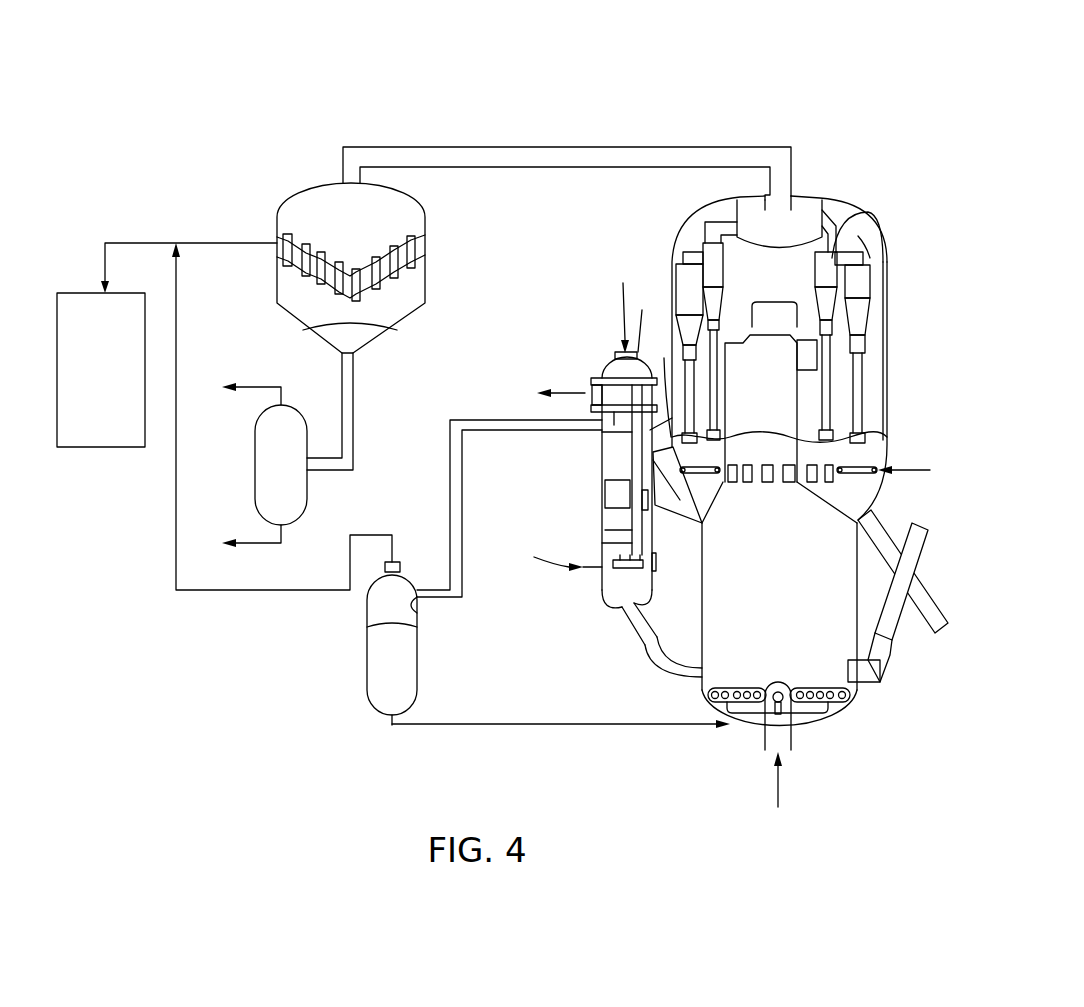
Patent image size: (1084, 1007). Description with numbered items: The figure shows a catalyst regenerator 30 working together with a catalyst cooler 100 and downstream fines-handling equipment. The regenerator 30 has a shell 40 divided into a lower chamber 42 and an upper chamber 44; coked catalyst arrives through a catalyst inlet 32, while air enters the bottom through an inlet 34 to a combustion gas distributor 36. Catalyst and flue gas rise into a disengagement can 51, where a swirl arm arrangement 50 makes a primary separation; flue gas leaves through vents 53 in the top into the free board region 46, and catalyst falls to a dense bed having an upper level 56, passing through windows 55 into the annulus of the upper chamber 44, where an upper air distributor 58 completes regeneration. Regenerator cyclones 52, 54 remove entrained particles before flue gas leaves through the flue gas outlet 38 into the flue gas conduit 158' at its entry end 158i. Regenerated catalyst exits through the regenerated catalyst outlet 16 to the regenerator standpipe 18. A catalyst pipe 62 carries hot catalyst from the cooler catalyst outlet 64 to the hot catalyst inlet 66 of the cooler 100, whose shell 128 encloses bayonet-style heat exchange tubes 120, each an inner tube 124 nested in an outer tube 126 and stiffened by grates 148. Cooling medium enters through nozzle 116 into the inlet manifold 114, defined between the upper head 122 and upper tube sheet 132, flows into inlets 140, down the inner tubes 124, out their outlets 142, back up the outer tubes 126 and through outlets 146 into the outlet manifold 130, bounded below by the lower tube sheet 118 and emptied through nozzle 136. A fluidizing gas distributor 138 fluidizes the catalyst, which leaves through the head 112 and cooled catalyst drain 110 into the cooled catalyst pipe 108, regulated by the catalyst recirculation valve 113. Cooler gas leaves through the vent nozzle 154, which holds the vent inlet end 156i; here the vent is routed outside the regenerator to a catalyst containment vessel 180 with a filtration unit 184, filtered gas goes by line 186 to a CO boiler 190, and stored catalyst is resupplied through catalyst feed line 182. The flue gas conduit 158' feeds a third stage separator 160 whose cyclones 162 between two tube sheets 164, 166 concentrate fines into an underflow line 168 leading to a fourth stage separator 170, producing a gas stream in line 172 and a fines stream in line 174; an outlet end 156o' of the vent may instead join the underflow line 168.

The catalyst regenerator 30 is at (773, 429).
The flue gas conduit 158' is at (583, 149).
The plenum inlet 158i is at (782, 192).
The flue gas outlet 38 is at (795, 197).
The regenerator shell 40 is at (675, 232).
The regenerator cyclone 54 is at (843, 217).
The free board region 46 is at (860, 238).
The regenerator cyclone 52 is at (888, 347).
The upper chamber 44 is at (887, 305).
The vents 53 is at (830, 318).
The swirl arm arrangement 50 is at (833, 342).
The disengagement can 51 is at (752, 312).
The upper level of dense catalyst bed 56 is at (868, 437).
The upper air distributor 58 is at (847, 476).
The windows 55 is at (787, 482).
The catalyst pipe 62 is at (665, 452).
The hot catalyst inlet 66 is at (653, 462).
The cooler catalyst outlet 64 is at (657, 386).
The regenerated catalyst outlet 16 is at (858, 532).
The regenerator standpipe 18 is at (922, 625).
The catalyst inlet 32 is at (850, 706).
The lower chamber 42 is at (852, 710).
The inlet 34 is at (792, 733).
The combustion gas distributor 36 is at (751, 705).
The catalyst cooler 100 is at (581, 479).
The cooled catalyst drain 110 is at (627, 607).
The frustoconical or hemispherical head 112 is at (603, 593).
The catalyst recirculation valve 113 is at (640, 645).
The cooled catalyst pipe 108 is at (672, 676).
The inlet manifold 114 is at (606, 366).
The cooling medium nozzle 116 is at (623, 304).
The upper head 122 is at (616, 356).
The upper tube sheet 132 is at (592, 380).
The outlet manifold 130 is at (593, 391).
The nozzle 136 is at (588, 397).
The inlet 140 is at (648, 319).
The inlet end of vent 156i is at (562, 405).
The outlet 146 is at (627, 417).
The vent nozzle 154 is at (600, 432).
The lower tube sheet 118 is at (614, 417).
The grates 148 is at (605, 490).
The outer tube 126 is at (627, 513).
The inner tube 124 is at (627, 532).
The heat exchange tube 120 is at (627, 543).
The fluidizing gas distributor 138 is at (546, 563).
The shell 128 is at (600, 577).
The outlet 142 is at (652, 556).
The outlet end of vent 156o' is at (313, 411).
The third stage separator 160 is at (362, 273).
The cyclones 162 is at (305, 272).
The tube sheet 164 is at (420, 238).
The tube sheet 166 is at (418, 250).
The underflow line 168 is at (350, 352).
The fourth stage separator 170 is at (255, 480).
The line 172 is at (257, 386).
The line 174 is at (267, 545).
The catalyst containment vessel 180 is at (396, 611).
The catalyst feed line 182 is at (593, 727).
The filtration unit 184 is at (403, 568).
The line 186 is at (176, 485).
The CO boiler 190 is at (88, 292).